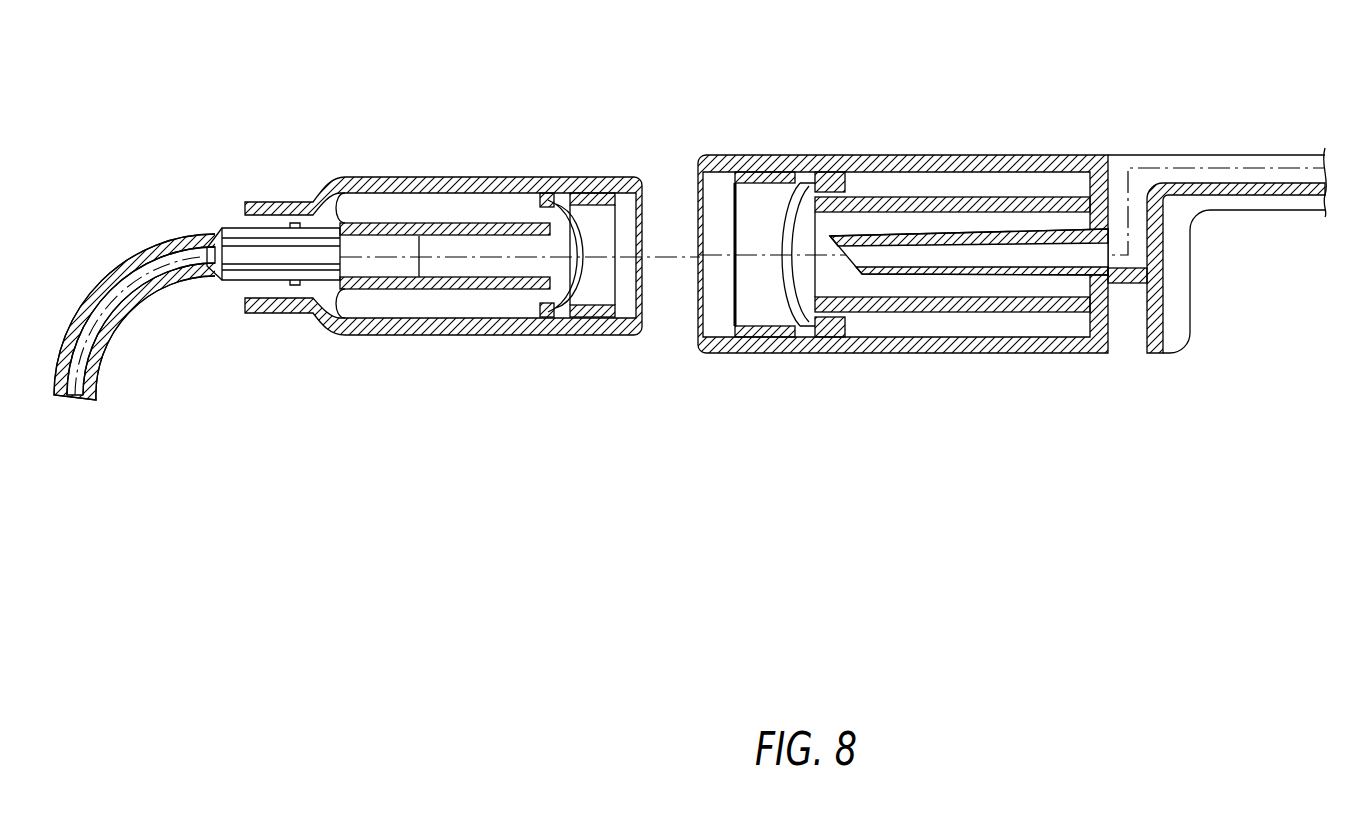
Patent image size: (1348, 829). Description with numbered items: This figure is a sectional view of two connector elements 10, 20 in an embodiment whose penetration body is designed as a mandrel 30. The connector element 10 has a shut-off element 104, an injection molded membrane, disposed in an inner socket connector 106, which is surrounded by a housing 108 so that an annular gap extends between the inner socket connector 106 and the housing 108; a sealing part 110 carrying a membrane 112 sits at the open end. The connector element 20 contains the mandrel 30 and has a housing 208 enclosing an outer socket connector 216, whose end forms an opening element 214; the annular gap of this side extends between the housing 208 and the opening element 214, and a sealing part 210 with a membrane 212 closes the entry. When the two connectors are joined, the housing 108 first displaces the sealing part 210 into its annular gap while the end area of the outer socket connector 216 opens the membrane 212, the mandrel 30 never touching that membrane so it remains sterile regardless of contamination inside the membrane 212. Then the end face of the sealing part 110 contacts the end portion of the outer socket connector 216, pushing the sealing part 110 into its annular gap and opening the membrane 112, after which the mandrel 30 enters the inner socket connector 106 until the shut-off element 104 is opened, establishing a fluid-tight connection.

The connector element 10 is at (472, 148).
The shut-off element 104 is at (413, 245).
The inner socket connector 106 is at (398, 335).
The housing 108 is at (472, 335).
The sealing part 110 is at (600, 335).
The membrane 112 is at (548, 330).
The connector element 20 is at (968, 140).
The housing 208 is at (868, 155).
The sealing part 210 is at (772, 337).
The membrane 212 is at (837, 330).
The opening element 214 is at (822, 178).
The outer socket connector 216 is at (946, 312).
The mandrel 30 is at (1003, 280).